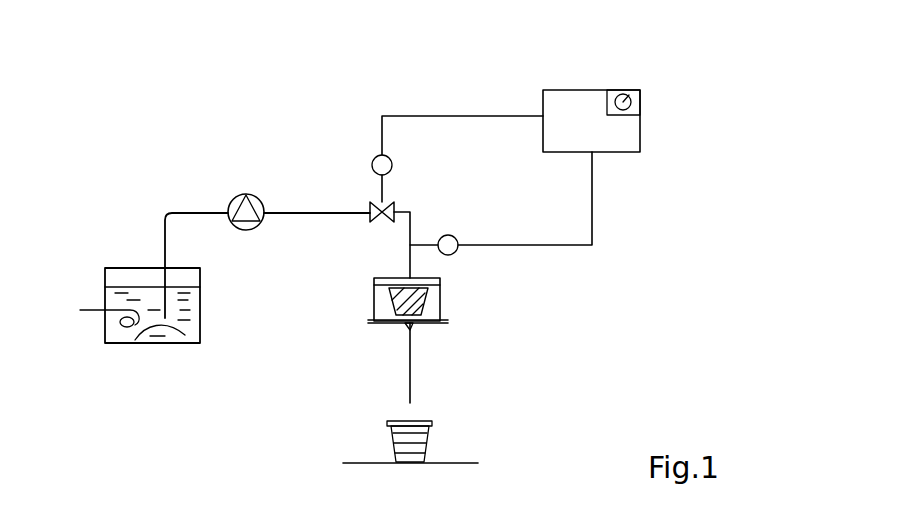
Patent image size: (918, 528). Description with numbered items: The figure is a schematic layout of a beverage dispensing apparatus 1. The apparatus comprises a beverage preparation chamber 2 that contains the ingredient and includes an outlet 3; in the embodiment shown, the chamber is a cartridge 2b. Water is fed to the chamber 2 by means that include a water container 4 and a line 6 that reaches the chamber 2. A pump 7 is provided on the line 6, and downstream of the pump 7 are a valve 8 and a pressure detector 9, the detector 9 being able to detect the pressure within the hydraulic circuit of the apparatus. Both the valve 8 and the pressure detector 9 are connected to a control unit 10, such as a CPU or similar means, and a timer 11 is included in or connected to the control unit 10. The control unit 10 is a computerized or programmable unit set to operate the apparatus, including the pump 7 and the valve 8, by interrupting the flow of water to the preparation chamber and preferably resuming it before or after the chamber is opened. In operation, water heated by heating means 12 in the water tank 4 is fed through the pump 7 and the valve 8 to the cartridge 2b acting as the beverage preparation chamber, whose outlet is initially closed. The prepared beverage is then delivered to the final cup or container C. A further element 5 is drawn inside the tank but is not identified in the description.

The beverage dispensing apparatus 1 is at (708, 237).
The beverage preparation chamber 2 is at (441, 283).
The cartridge 2b is at (430, 298).
The outlet 3 is at (415, 325).
The water container 4 is at (152, 345).
The heating element 5 is at (185, 335).
The line 6 is at (168, 234).
The pump 7 is at (238, 196).
The valve 8 is at (372, 218).
The pressure detector 9 is at (453, 236).
The control unit 10 is at (622, 134).
The timer 11 is at (637, 90).
The heating means 12 is at (105, 337).
The cup or container C is at (432, 440).